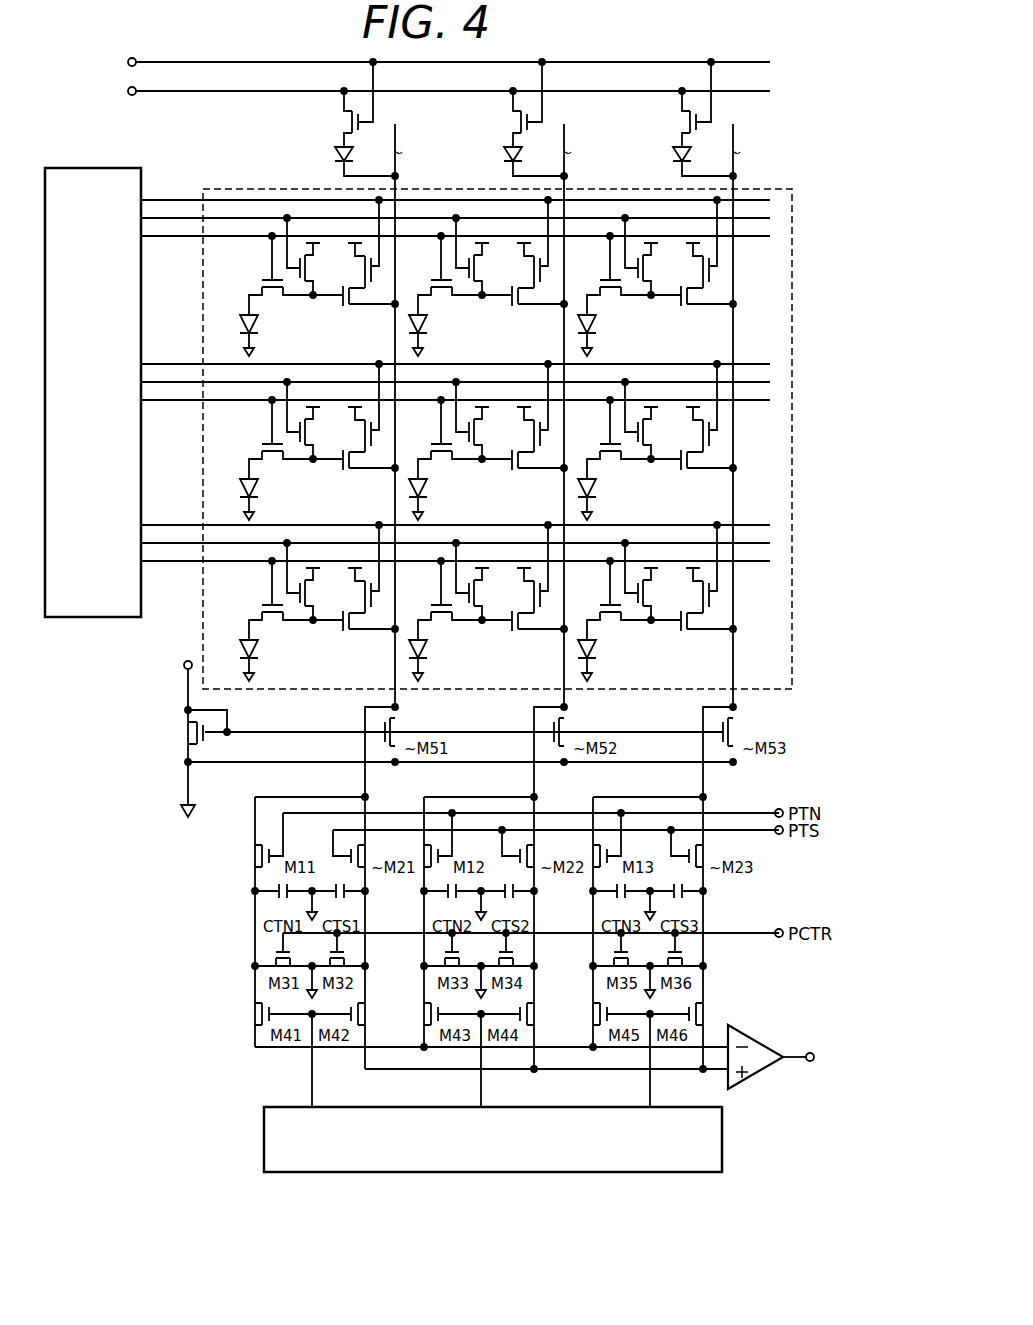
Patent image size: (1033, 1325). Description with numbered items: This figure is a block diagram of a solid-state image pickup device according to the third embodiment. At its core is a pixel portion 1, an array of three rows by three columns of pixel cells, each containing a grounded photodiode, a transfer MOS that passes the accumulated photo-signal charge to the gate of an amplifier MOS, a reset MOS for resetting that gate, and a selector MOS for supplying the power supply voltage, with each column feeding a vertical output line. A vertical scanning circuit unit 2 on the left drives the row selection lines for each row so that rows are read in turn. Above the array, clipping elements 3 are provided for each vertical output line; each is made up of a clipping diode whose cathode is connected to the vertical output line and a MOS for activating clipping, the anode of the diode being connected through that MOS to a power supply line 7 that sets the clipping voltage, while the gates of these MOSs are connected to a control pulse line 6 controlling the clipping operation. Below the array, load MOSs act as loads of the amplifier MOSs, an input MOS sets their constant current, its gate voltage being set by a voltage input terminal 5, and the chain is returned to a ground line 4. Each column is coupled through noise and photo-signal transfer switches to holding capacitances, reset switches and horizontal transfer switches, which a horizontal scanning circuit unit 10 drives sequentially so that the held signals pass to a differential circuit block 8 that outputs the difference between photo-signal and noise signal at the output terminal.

The pixel portion 1 is at (232, 189).
The vertical scanning circuit unit 2 is at (64, 170).
The clipping element 3 is at (284, 146).
The GND line 4 is at (188, 786).
The voltage input terminal 5 is at (188, 661).
The control pulse line 6 is at (128, 64).
The power supply line 7 is at (128, 93).
The differential circuit block 8 is at (752, 1037).
The horizontal scanning circuit unit 10 is at (722, 1152).